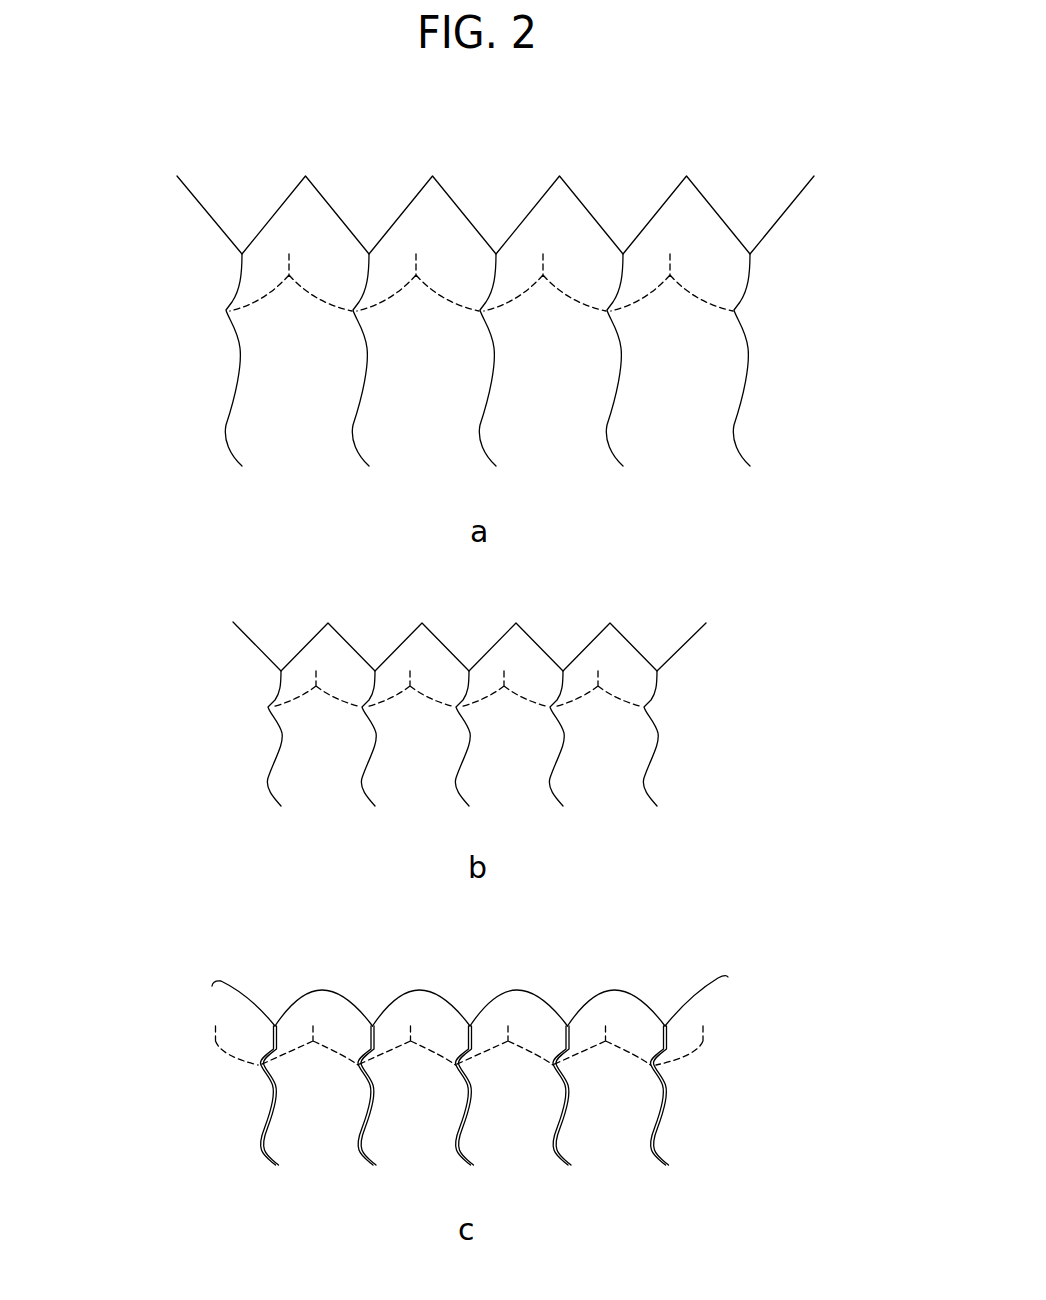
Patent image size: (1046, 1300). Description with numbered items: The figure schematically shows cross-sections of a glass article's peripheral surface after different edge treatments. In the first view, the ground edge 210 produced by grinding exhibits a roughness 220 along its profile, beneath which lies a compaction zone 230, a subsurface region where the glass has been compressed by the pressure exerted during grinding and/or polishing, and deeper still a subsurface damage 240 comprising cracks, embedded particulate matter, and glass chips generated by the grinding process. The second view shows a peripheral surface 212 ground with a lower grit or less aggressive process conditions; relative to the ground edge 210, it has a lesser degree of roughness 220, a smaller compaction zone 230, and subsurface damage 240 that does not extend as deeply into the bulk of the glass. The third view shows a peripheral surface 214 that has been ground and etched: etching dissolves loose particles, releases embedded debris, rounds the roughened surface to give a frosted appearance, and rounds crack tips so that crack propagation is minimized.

In FIG. 2a, the ground edge 210 is at (150, 175).
In FIG. 2b, the peripheral surface ground with lower grit or less aggressive conditions 212 is at (197, 598).
In FIG. 2c, the cross-sectional feature group (third layer structure) 214 is at (185, 983).
In FIG. 2a, the roughness 220 is at (447, 176).
In FIG. 2b, the roughness 220 is at (433, 612).
In FIG. 2c, the roughness 220 is at (435, 985).
In FIG. 2a, the compaction zone 230 is at (697, 248).
In FIG. 2b, the compaction zone 230 is at (625, 683).
In FIG. 2c, the compaction zone 230 is at (647, 1033).
In FIG. 2a, the subsurface damage 240 is at (625, 405).
In FIG. 2b, the subsurface damage 240 is at (565, 767).
In FIG. 2c, the subsurface damage 240 is at (470, 1107).